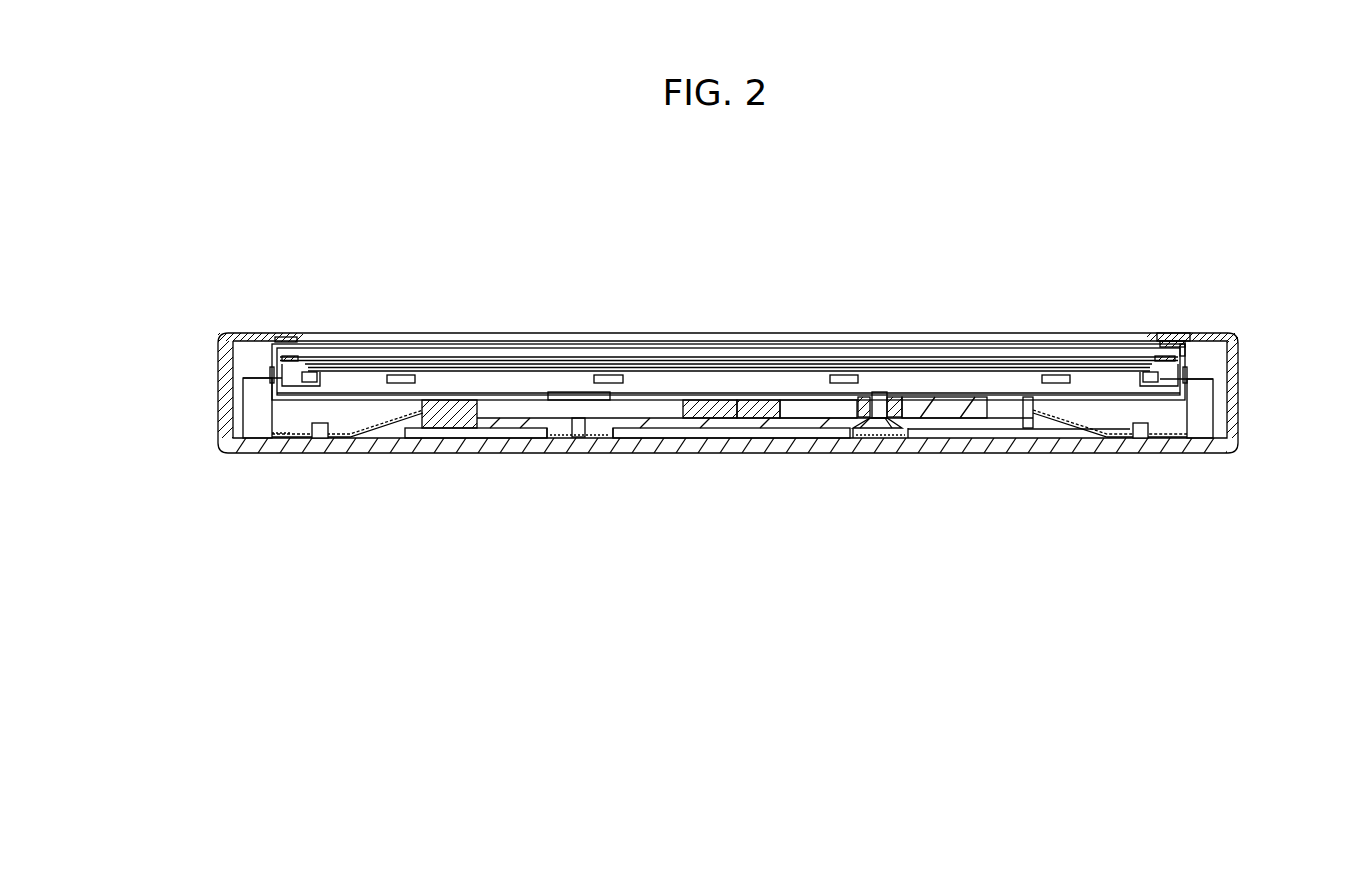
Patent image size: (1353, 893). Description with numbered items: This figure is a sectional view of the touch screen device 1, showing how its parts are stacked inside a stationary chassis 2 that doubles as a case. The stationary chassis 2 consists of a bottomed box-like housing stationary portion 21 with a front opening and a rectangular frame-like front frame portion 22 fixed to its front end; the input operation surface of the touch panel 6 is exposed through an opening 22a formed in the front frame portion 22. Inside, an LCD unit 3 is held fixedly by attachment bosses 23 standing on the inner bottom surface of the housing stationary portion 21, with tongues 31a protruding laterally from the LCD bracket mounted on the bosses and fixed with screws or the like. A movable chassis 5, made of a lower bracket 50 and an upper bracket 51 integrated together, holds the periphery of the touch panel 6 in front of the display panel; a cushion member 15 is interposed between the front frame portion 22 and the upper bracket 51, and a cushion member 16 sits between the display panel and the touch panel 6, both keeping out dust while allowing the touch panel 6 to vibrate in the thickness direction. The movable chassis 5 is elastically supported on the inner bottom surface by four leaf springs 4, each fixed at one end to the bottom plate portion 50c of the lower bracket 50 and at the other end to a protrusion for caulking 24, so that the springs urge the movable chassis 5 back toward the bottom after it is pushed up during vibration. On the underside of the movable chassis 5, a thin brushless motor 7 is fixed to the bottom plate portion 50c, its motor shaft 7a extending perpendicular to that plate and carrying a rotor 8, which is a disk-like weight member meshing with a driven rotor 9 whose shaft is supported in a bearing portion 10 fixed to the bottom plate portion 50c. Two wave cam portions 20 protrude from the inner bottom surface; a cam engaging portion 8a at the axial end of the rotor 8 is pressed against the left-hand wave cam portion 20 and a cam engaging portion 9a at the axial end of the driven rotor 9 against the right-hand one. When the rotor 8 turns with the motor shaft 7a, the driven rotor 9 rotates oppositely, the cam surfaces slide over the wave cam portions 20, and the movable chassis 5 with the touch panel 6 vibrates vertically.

The touch screen device 1 is at (1024, 296).
The stationary chassis 2 is at (158, 250).
The housing stationary portion 21 is at (228, 358).
The front frame portion 22 is at (245, 337).
The opening 22a is at (310, 338).
The LCD unit 3 is at (805, 382).
The leaf spring 4 is at (395, 425).
The movable chassis 5 is at (1298, 297).
The touch panel 6 is at (697, 355).
The motor 7 is at (510, 410).
The motor shaft 7a is at (578, 440).
The rotor 8 is at (452, 438).
The cam engaging portion 8a is at (602, 440).
The driven rotor 9 is at (1005, 440).
The cam engaging portion 9a is at (875, 440).
The bearing portion 10 is at (902, 408).
The cushion member 15 is at (1170, 338).
The cushion member 16 is at (1185, 345).
The wave cam portion 20 is at (553, 440).
The attachment boss 23 is at (253, 425).
The protrusion for caulking 24 is at (320, 440).
The tongue 31a is at (265, 378).
The lower bracket 50 is at (1160, 400).
The bottom plate portion 50c is at (283, 440).
The upper bracket 51 is at (1172, 352).